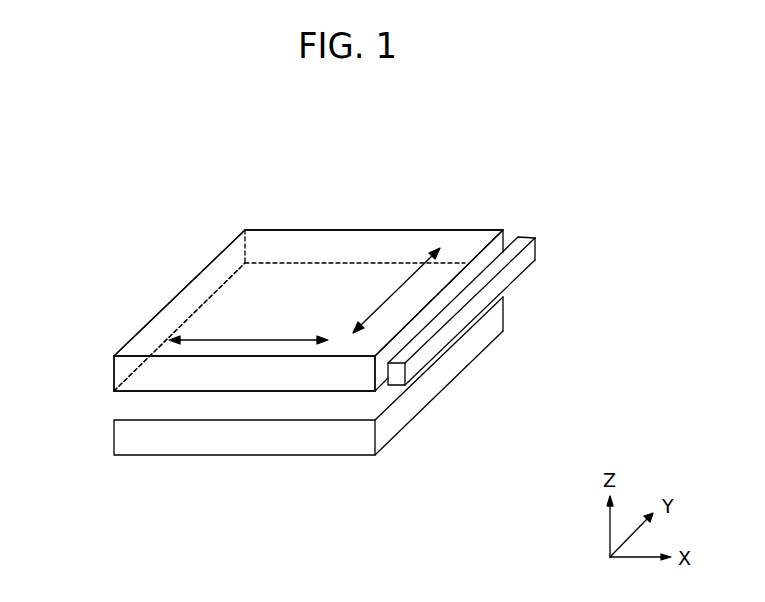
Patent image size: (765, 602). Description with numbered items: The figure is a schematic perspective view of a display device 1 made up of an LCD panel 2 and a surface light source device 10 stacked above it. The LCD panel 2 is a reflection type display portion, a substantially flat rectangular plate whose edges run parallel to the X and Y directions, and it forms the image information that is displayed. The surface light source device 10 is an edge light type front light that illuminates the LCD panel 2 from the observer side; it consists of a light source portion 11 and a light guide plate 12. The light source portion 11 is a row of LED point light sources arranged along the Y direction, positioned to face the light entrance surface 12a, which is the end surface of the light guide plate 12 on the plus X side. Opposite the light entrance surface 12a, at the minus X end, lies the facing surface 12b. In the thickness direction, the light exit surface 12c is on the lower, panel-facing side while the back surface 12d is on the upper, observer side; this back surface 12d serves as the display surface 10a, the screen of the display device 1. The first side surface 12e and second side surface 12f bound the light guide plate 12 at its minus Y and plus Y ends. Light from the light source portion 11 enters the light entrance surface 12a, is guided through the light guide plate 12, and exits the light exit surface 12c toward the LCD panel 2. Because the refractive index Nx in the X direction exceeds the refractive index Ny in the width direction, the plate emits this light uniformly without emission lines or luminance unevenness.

The display device 1 is at (492, 145).
The LCD panel 2 is at (322, 441).
The surface light source device 10 is at (563, 370).
The display surface 10a is at (308, 261).
The light source portion 11 is at (430, 351).
The light guide plate 12 is at (440, 302).
The light entrance surface 12a is at (507, 238).
The facing surface 12b is at (166, 314).
The light exit surface 12c is at (253, 375).
The back surface 12d is at (300, 283).
The first side surface 12e is at (172, 380).
The second side surface 12f is at (387, 248).